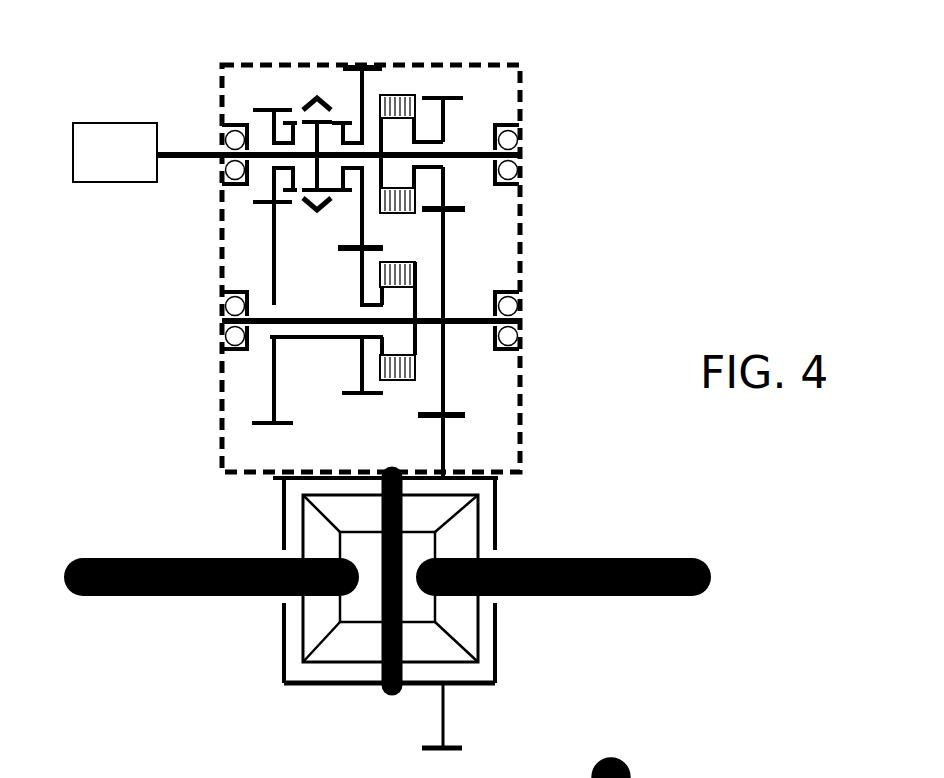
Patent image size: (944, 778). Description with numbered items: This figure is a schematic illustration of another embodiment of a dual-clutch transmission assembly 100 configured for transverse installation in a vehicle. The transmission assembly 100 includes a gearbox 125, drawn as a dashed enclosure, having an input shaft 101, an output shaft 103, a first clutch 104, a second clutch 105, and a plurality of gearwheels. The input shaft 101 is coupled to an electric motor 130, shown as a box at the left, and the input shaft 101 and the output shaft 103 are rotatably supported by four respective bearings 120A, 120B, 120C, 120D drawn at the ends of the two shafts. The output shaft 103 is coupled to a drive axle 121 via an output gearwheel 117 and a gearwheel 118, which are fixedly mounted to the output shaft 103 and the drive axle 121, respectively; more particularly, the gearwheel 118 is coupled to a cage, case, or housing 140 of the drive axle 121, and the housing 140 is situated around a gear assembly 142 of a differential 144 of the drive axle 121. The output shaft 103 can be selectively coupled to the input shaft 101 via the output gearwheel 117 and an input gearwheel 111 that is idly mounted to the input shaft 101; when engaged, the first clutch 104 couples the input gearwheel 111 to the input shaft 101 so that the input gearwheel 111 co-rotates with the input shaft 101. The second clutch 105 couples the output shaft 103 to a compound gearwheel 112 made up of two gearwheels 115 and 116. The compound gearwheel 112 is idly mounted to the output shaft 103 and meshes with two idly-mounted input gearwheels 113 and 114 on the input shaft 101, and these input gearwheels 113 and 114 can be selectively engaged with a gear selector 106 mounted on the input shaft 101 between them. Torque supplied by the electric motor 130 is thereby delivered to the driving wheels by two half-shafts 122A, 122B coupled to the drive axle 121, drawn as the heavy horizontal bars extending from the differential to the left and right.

The dual-clutch transmission assembly 100 is at (208, 330).
The input shaft 101 is at (210, 148).
The output shaft 103 is at (260, 316).
The first clutch 104 is at (403, 95).
The second clutch 105 is at (403, 380).
The gear selector 106 is at (315, 95).
The input gearwheel 111 is at (442, 97).
The compound gearwheel 112 is at (287, 340).
The input gearwheel 113 is at (272, 108).
The input gearwheel 114 is at (362, 67).
The gearwheel 115 is at (275, 247).
The gearwheel 116 is at (362, 287).
The output gearwheel 117 is at (445, 295).
The gearwheel 118 is at (442, 720).
The bearing 120A is at (232, 335).
The bearing 120B is at (511, 306).
The bearing 120C is at (233, 170).
The bearing 120D is at (510, 125).
The drive axle 121 is at (265, 528).
The half-shaft 122A is at (198, 558).
The half-shaft 122B is at (640, 558).
The gearbox 125 is at (555, 213).
The electric motor 130 is at (115, 152).
The housing 140 is at (283, 622).
The gear assembly 142 is at (315, 630).
The differential 144 is at (317, 687).